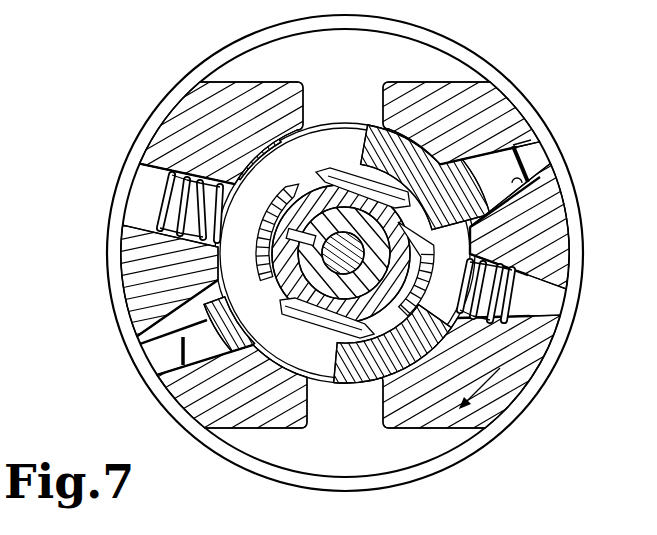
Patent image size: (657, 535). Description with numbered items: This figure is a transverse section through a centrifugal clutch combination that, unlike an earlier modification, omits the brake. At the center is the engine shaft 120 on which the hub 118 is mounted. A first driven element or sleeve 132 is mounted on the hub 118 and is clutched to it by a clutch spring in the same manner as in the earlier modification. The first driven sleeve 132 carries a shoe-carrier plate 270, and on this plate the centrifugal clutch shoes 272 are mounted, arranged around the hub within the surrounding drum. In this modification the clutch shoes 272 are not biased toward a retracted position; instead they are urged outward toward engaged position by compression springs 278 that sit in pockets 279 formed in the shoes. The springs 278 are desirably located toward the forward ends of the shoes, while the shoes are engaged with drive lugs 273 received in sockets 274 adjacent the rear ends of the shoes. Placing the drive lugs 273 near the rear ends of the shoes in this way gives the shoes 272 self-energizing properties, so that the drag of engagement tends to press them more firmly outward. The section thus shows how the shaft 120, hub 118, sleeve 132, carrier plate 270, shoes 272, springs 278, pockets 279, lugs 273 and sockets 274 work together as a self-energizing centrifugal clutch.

The hub 118 is at (345, 185).
The engine shaft 120 is at (398, 225).
The first driven element or sleeve 132 is at (280, 208).
The shoe-carrier plate 270 is at (286, 362).
The centrifugal clutch shoes 272 is at (134, 290).
The lugs 273 is at (512, 166).
The sockets 274 is at (530, 178).
The compression springs 278 is at (505, 297).
The pockets 279 is at (502, 326).